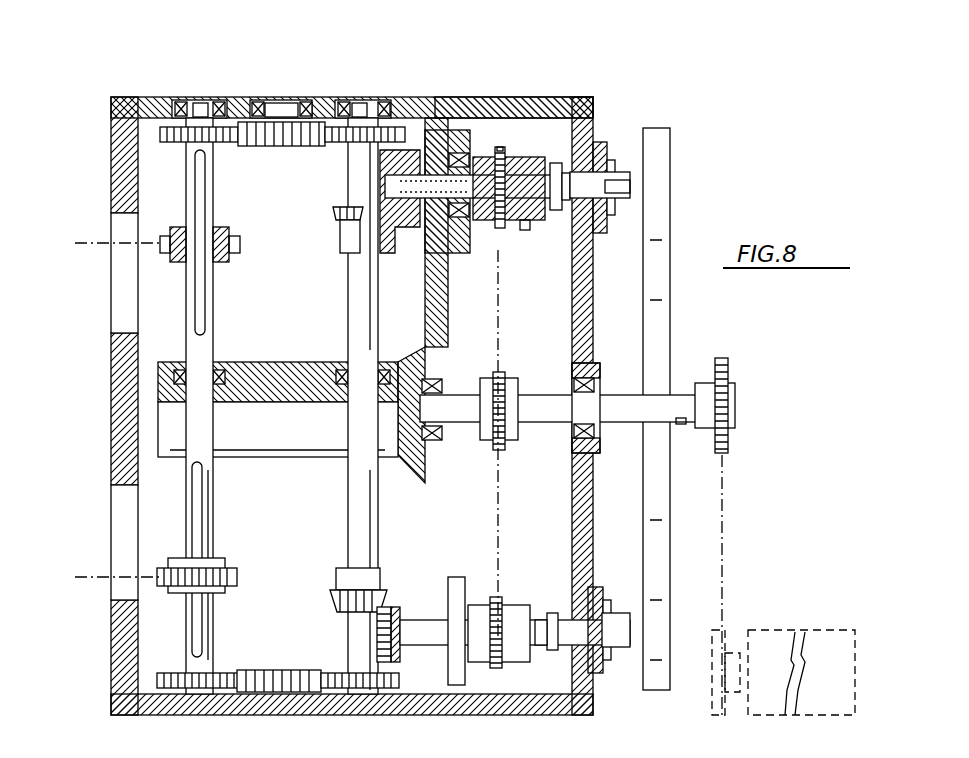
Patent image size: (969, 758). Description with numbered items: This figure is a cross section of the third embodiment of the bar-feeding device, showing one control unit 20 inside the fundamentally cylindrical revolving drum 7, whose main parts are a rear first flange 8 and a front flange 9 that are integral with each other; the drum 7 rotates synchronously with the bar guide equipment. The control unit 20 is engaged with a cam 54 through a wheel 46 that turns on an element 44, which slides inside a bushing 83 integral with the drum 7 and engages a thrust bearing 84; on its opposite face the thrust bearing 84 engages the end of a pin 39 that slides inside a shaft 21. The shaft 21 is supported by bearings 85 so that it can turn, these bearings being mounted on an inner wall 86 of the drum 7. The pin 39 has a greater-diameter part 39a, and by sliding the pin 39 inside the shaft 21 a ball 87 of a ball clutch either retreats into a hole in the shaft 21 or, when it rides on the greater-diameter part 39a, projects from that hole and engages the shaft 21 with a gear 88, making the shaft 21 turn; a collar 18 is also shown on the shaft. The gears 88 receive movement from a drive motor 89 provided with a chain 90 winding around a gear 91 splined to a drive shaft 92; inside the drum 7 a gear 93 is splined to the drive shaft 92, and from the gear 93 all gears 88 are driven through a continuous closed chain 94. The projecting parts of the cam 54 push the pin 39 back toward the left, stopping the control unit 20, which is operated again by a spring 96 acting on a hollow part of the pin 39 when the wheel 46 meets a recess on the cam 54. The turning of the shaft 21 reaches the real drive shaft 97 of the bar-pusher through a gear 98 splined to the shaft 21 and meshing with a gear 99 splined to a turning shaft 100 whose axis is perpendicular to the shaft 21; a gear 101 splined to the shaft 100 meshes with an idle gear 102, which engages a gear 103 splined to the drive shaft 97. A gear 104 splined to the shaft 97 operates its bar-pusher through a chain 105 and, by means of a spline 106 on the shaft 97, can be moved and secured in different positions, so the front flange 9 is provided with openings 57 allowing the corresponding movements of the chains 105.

The drum 7 is at (451, 80).
The first flange 8 is at (585, 506).
The front flange 9 is at (118, 382).
The collar 18 is at (560, 205).
The control unit 20 is at (506, 138).
The shaft 21 is at (525, 230).
The pin 39 is at (530, 163).
The greater-diameter part 39a is at (500, 222).
The element 44 is at (625, 200).
The wheel 46 is at (633, 180).
The cam 54 is at (668, 150).
The openings 57 is at (118, 228).
The bushing 83 is at (612, 140).
The thrust bearing 84 is at (600, 145).
The bearings 85 is at (432, 118).
The inner wall 86 is at (430, 300).
The ball 87 is at (522, 156).
The gear 88 is at (490, 157).
The drive motor 89 is at (778, 630).
The chain 90 is at (725, 530).
The gear 91 is at (728, 372).
The drive shaft 92 is at (683, 422).
The gear 93 is at (498, 445).
The chain 94 is at (497, 530).
The spring 96 is at (420, 250).
The drive shaft 97 is at (185, 276).
The gear 98 is at (378, 160).
The gear 99 is at (340, 240).
The turning shaft 100 is at (350, 312).
The gear 101 is at (323, 127).
The idle gear 102 is at (240, 128).
The gear 103 is at (163, 127).
The gear 104 is at (215, 227).
The chain 105 is at (100, 248).
The spline 106 is at (200, 318).